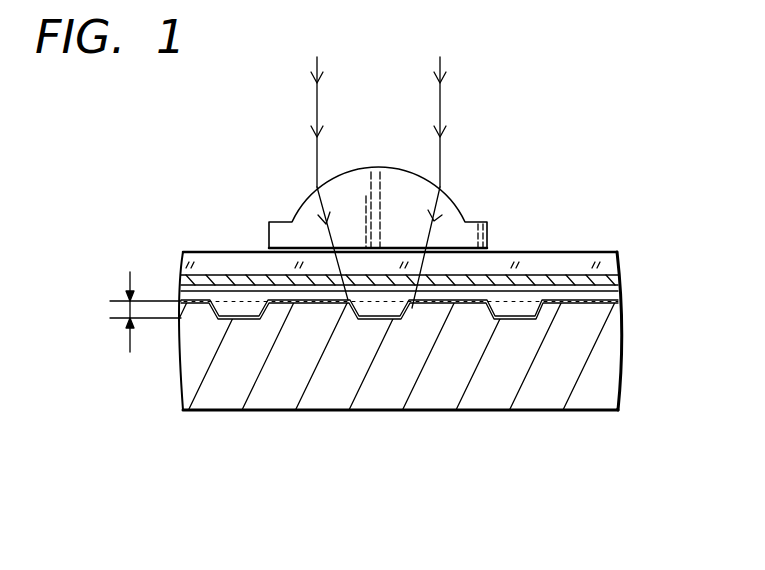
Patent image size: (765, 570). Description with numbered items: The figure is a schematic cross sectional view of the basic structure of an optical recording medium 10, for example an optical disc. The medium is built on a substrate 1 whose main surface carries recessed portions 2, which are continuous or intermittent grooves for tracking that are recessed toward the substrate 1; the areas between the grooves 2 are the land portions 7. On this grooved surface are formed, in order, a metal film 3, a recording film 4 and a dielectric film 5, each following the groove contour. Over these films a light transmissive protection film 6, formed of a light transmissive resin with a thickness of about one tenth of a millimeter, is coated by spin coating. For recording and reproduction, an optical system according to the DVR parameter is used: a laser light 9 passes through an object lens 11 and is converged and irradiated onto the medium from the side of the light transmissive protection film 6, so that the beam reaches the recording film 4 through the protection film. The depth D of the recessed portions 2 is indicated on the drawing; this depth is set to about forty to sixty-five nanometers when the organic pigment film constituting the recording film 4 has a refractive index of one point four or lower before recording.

The substrate 1 is at (595, 363).
The recessed portions 2 is at (237, 317).
The metal film 3 is at (613, 300).
The recording film 4 is at (613, 292).
The dielectric film 5 is at (613, 278).
The light transmissive protection film 6 is at (560, 263).
The land portions 7 is at (298, 298).
The laser light 9 is at (440, 102).
The optical recording medium 10 is at (576, 160).
The object lens 11 is at (390, 176).
The depth of the recessed portions D is at (130, 310).